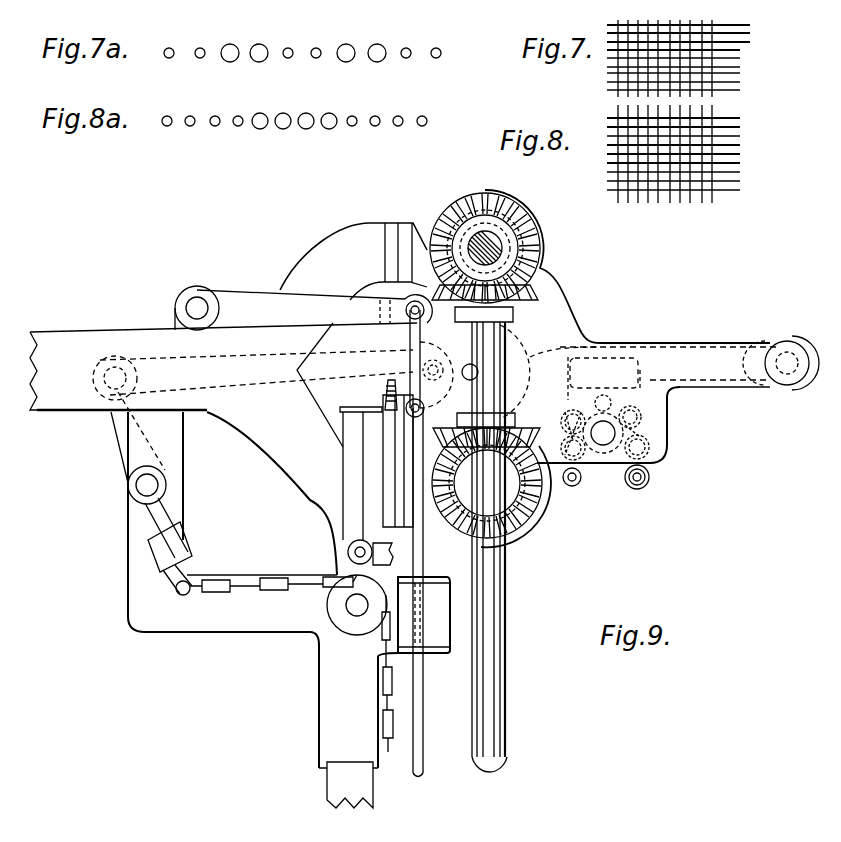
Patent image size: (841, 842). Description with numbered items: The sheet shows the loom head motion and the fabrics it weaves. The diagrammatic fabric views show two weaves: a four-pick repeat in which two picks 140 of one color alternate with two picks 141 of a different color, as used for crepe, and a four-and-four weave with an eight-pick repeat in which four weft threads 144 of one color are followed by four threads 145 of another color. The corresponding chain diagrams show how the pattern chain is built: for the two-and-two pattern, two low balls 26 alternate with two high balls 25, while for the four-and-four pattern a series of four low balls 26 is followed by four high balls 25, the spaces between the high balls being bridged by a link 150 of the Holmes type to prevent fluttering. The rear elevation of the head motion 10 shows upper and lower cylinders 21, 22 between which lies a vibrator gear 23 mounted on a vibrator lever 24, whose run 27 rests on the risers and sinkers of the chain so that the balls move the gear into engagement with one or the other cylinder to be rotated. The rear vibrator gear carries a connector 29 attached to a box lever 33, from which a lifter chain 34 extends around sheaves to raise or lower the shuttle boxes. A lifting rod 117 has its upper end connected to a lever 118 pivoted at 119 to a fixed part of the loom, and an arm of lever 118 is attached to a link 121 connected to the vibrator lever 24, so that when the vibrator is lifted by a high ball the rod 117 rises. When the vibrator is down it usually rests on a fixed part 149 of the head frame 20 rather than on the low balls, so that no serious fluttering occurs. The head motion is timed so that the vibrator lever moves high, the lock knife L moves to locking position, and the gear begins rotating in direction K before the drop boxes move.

In FIG. 9, the folding mechanism 10 is at (260, 260).
In FIG. 9, the frame 20 is at (350, 780).
In FIG. 9, the upper cylinder 21 is at (532, 225).
In FIG. 9, the lower cylinder 22 is at (556, 521).
In FIG. 9, the vibrator gear 23 is at (435, 360).
In FIG. 9, the vibrator lever 24 is at (400, 406).
In FIG. 7A, the high balls 25 is at (258, 44).
In FIG. 8A, the high balls 25 is at (264, 128).
In FIG. 9, the high balls 25 is at (652, 468).
In FIG. 7A, the low balls 26 is at (198, 48).
In FIG. 8A, the low balls 26 is at (237, 116).
In FIG. 9, the low balls 26 is at (612, 403).
In FIG. 9, the run of the vibrator 27 is at (617, 358).
In FIG. 9, the connector 29 is at (230, 398).
In FIG. 9, the box lever 33 is at (116, 445).
In FIG. 9, the lifter chain 34 is at (218, 585).
In FIG. 9, the lifting rod 117 is at (423, 758).
In FIG. 9, the lever 118 is at (240, 300).
In FIG. 9, the pivot 119 is at (195, 308).
In FIG. 9, the link 121 is at (410, 340).
In FIG. 7, the picks of one color 140 is at (740, 25).
In FIG. 7, the picks of a different color 141 is at (740, 42).
In FIG. 8, the weft threads of one color 144 is at (740, 118).
In FIG. 8, the weft threads of a different color 145 is at (740, 145).
In FIG. 9, the fixed part of the head frame 149 is at (385, 450).
In FIG. 8A, the link 150 is at (297, 113).
In FIG. 9, the direction of rotation K is at (562, 232).
In FIG. 9, the lock knife L is at (350, 462).